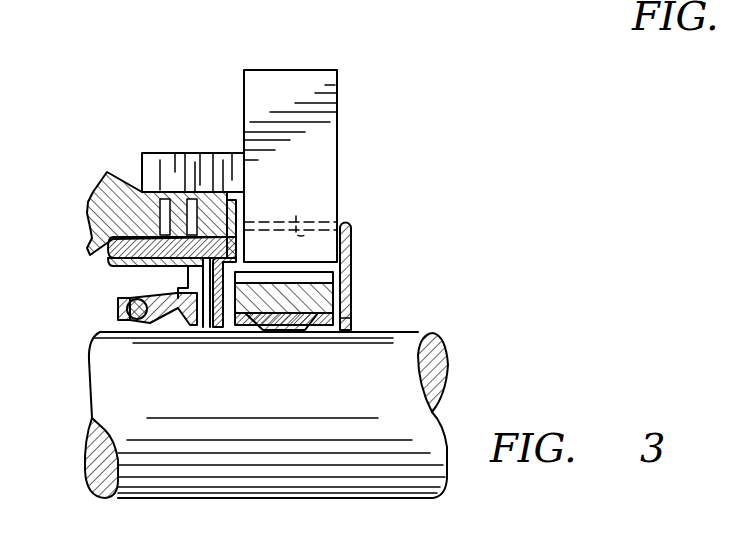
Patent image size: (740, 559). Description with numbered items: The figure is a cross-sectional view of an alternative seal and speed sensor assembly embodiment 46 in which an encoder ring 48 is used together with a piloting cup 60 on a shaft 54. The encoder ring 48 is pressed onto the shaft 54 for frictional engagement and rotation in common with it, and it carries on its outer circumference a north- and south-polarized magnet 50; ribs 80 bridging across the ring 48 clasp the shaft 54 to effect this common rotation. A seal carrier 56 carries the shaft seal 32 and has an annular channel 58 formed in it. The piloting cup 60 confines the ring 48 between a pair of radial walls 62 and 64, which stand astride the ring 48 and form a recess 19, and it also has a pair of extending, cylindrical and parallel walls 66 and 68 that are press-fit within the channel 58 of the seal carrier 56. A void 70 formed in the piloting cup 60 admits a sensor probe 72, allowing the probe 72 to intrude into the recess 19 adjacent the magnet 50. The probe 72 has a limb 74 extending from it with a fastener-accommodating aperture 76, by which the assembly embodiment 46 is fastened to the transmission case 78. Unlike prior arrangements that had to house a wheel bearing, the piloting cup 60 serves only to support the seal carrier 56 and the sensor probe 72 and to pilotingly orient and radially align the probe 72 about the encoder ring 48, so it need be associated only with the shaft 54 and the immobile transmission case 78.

The recess 19 is at (297, 220).
The shaft seal 32 is at (118, 320).
The assembly embodiment 46 is at (467, 262).
The encoder ring 48 is at (337, 315).
The north- and south-polarized magnet 50 is at (328, 277).
The shaft 54 is at (422, 410).
The seal carrier 56 is at (112, 268).
The annular channel 58 is at (118, 245).
The piloting cup 60 is at (350, 248).
The radial wall 62 is at (222, 325).
The radial wall 64 is at (345, 330).
The cylindrical wall 66 is at (212, 237).
The cylindrical wall 68 is at (205, 326).
The void 70 is at (318, 212).
The sensor probe 72 is at (246, 78).
The limb 74 is at (225, 168).
The fastener-accommodating aperture 76 is at (170, 168).
The transmission case 78 is at (110, 190).
The ribs 80 is at (298, 327).